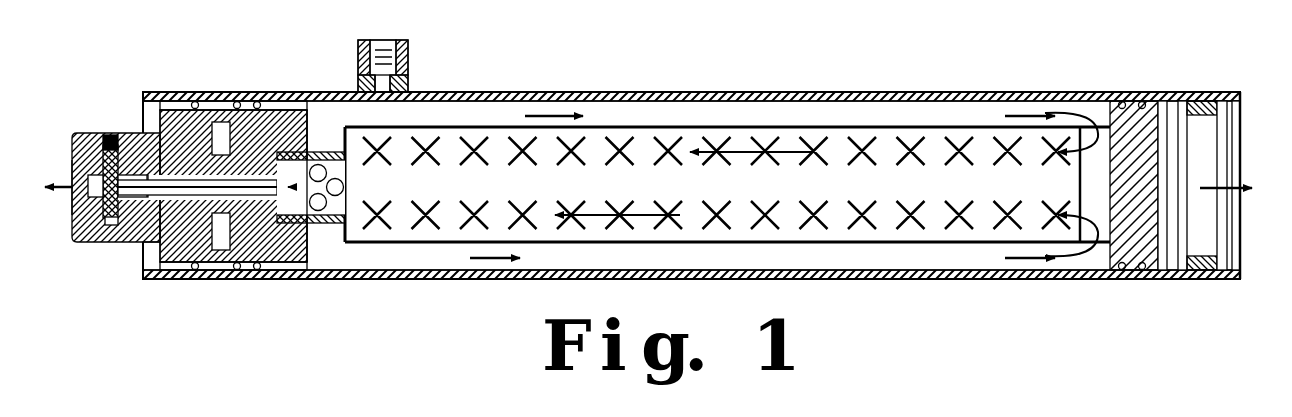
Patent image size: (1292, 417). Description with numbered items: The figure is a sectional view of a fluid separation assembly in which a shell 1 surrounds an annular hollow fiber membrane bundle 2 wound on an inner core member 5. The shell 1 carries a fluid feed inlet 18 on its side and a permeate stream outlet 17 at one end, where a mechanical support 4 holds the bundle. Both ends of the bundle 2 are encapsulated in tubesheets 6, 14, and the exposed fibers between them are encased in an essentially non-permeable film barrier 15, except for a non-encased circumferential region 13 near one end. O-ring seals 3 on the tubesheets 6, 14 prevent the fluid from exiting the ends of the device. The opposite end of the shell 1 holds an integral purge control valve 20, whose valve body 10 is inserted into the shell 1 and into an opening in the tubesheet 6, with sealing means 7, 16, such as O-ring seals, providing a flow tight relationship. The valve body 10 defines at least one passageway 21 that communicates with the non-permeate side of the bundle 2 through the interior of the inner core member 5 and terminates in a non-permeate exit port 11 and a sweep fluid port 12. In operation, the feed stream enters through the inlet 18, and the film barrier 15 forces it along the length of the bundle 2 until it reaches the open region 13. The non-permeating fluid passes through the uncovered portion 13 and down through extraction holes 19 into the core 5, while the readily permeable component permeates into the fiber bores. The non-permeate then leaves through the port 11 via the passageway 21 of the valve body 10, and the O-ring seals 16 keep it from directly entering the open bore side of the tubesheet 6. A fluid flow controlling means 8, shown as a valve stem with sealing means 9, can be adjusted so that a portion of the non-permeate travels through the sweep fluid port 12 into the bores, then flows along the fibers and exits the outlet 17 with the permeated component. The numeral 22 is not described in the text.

The shell 1 is at (642, 92).
The hollow fiber membrane bundle 2 is at (850, 162).
The O-ring seals 3 is at (246, 97).
The mechanical support 4 is at (1197, 92).
The inner core member 5 is at (326, 218).
The tubesheet 6 is at (283, 280).
The sealing means 7 is at (197, 97).
The fluid flow controlling means 8 is at (108, 132).
The sealing means 9 is at (73, 163).
The valve body 10 is at (182, 97).
The non-permeate exit port 11 is at (73, 228).
The sweep fluid port 12 is at (127, 243).
The non-encased circumferential region 13 is at (1095, 227).
The tubesheet 14 is at (1130, 257).
The film barrier 15 is at (743, 125).
The sealing means 16 is at (300, 97).
The permeate stream outlet 17 is at (1202, 237).
The fluid feed inlet 18 is at (412, 70).
The extraction holes 19 is at (343, 187).
The integral purge control valve 20 is at (158, 279).
The passageway 21 is at (295, 280).
The bore 22 is at (208, 329).